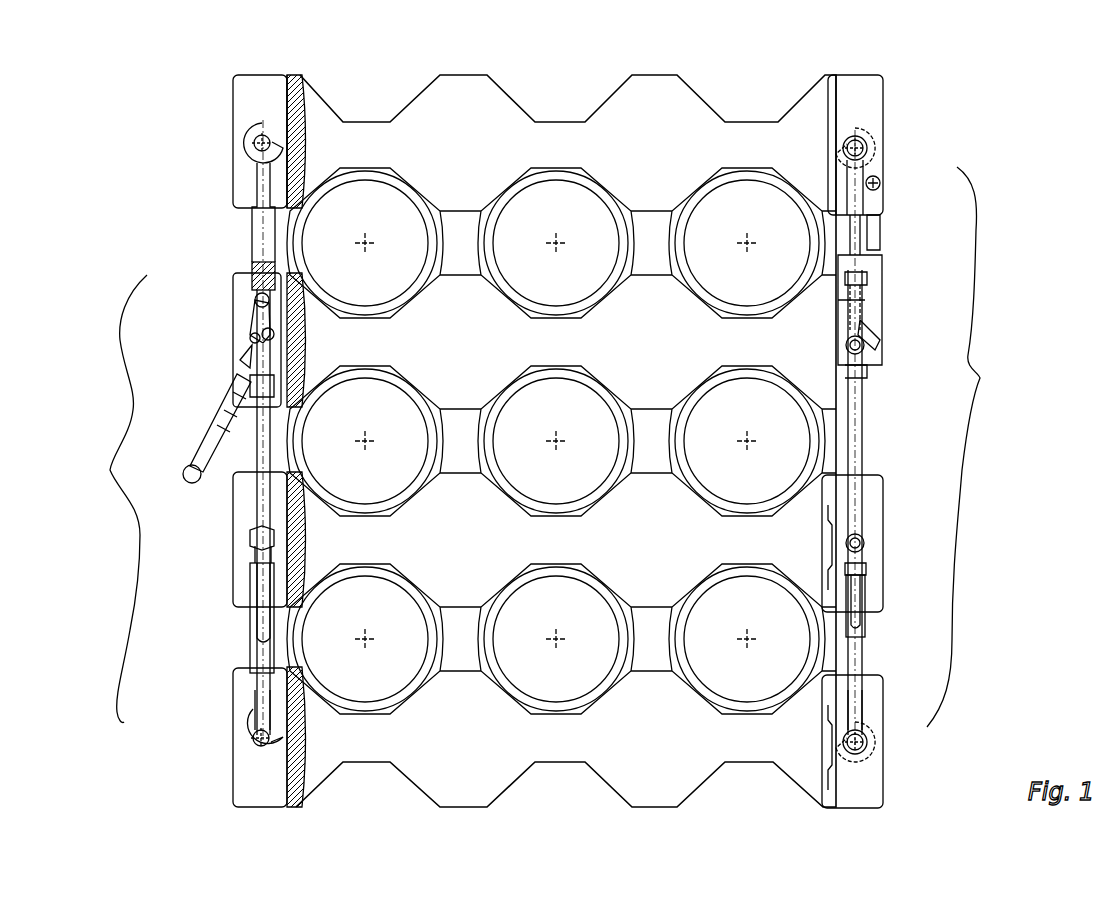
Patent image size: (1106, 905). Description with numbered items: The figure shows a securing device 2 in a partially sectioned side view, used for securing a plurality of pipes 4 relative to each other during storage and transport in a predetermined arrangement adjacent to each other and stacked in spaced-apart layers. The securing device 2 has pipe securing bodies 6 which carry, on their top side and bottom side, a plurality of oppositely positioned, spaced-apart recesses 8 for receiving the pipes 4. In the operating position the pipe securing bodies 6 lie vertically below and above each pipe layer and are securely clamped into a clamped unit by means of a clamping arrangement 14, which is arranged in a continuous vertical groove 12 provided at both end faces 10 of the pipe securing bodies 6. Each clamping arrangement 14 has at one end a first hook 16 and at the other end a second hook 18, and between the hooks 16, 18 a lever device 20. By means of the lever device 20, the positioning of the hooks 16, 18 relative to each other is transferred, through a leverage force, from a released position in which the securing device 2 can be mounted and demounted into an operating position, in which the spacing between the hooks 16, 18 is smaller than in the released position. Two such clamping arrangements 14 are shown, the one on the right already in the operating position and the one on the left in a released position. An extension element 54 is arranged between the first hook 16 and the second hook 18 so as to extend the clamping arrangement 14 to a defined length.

The securing device 2 is at (962, 97).
The pipes 4 is at (436, 240).
The pipe securing bodies 6 is at (490, 108).
The recesses 8 is at (372, 117).
The end faces 10 is at (231, 132).
The vertical groove 12 is at (285, 168).
The clamping arrangement 14 is at (914, 185).
The first hook 16 is at (262, 183).
The second hook 18 is at (258, 710).
The lever device 20 is at (250, 350).
The extension element 54 is at (258, 518).